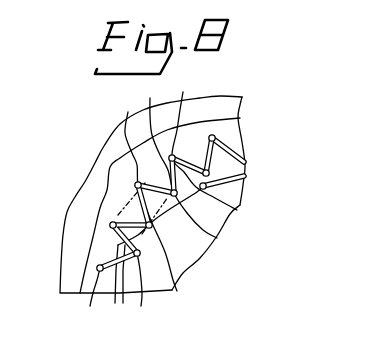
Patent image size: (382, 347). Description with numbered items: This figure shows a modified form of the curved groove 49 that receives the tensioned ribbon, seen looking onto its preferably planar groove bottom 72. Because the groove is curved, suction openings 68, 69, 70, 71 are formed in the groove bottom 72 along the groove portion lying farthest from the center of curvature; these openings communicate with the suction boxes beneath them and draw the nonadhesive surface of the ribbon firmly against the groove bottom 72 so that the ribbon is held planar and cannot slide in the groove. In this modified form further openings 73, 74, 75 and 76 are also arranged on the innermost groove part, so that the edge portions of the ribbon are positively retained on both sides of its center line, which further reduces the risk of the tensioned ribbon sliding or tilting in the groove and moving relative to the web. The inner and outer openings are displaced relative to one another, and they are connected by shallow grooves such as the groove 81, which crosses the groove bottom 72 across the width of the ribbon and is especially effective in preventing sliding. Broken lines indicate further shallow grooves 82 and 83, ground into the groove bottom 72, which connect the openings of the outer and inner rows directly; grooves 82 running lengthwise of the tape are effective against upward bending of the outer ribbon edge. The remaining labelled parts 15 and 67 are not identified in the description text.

The housing rim 15 is at (103, 152).
The groove 49 is at (239, 210).
The guide ring 67 is at (237, 144).
The suction opening 68 is at (86, 297).
The suction opening 69 is at (100, 208).
The suction opening 70 is at (147, 191).
The suction opening 71 is at (204, 140).
The groove bottom 72 is at (178, 157).
The suction opening 73 is at (143, 290).
The suction opening 74 is at (194, 266).
The suction opening 75 is at (218, 240).
The suction opening 76 is at (244, 176).
The shallow groove 81 is at (118, 245).
The shallow groove 82 is at (127, 190).
The shallow groove 83 is at (172, 290).